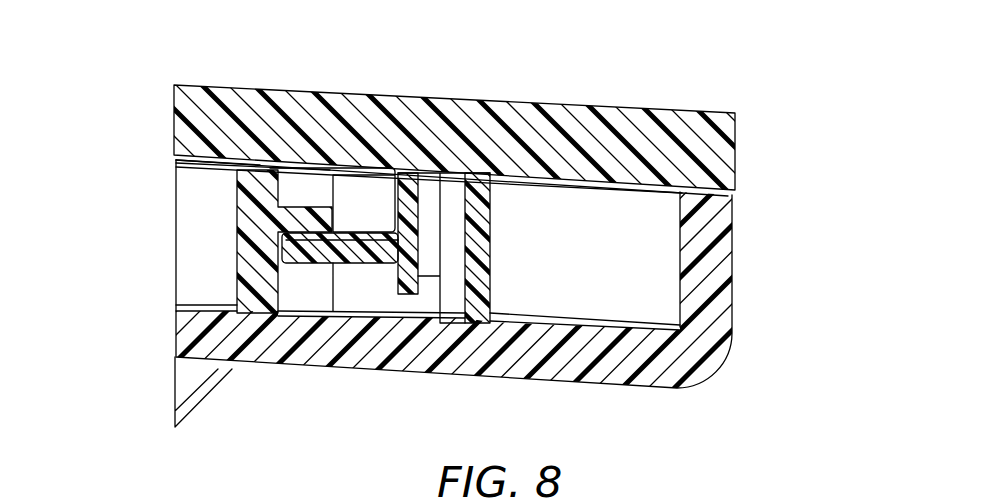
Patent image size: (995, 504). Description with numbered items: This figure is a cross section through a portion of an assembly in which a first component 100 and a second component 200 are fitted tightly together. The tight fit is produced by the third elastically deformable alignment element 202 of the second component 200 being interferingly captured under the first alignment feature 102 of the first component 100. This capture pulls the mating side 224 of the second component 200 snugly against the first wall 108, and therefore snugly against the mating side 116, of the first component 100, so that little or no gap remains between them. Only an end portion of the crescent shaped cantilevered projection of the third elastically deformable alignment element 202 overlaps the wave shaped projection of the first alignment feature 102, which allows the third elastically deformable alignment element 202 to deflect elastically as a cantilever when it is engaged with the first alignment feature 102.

The first component 100 is at (745, 320).
The second component 200 is at (651, 106).
The first wall 108 is at (237, 210).
The first alignment feature 102 is at (307, 207).
The third elastically deformable alignment element 202 is at (363, 230).
The mating side of the first component 116 is at (255, 157).
The mating side of the second component 224 is at (204, 168).